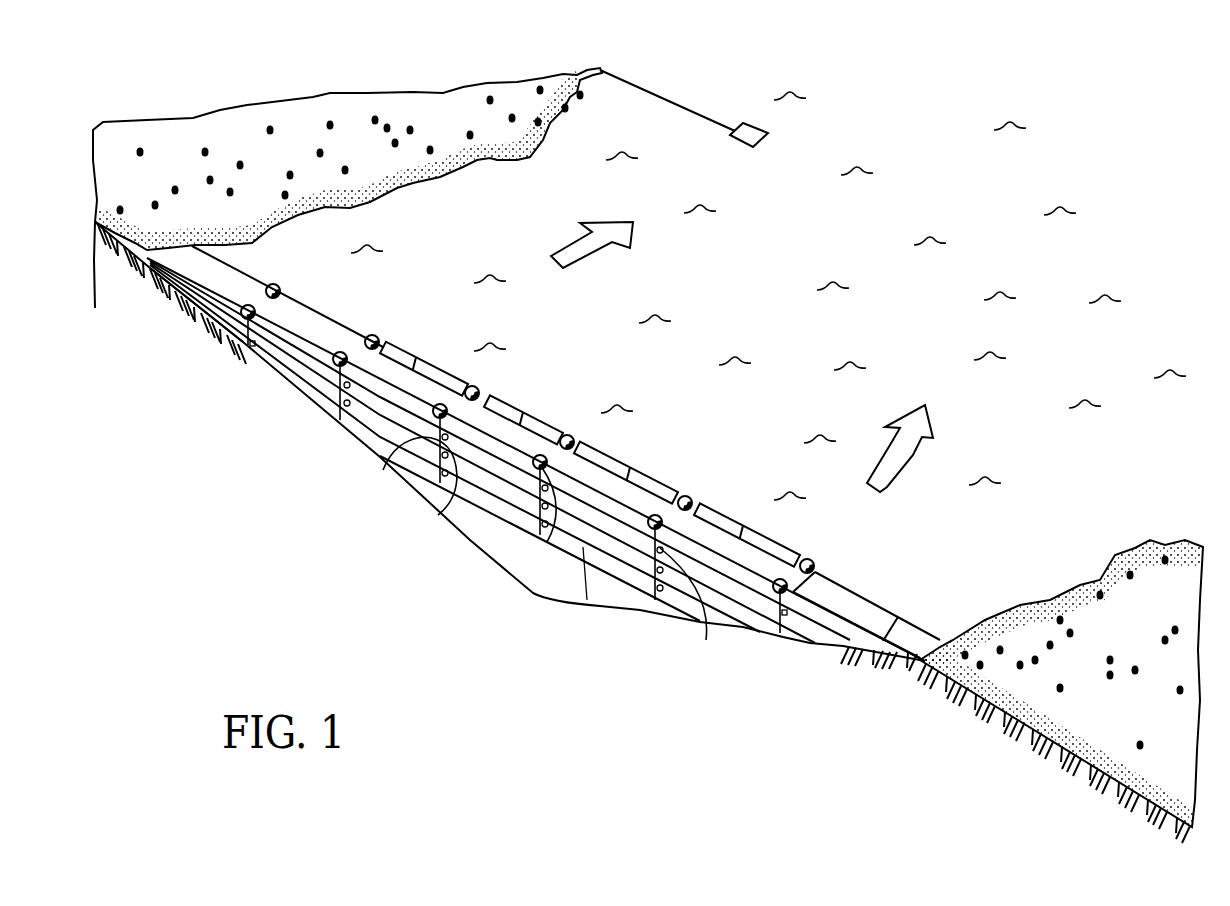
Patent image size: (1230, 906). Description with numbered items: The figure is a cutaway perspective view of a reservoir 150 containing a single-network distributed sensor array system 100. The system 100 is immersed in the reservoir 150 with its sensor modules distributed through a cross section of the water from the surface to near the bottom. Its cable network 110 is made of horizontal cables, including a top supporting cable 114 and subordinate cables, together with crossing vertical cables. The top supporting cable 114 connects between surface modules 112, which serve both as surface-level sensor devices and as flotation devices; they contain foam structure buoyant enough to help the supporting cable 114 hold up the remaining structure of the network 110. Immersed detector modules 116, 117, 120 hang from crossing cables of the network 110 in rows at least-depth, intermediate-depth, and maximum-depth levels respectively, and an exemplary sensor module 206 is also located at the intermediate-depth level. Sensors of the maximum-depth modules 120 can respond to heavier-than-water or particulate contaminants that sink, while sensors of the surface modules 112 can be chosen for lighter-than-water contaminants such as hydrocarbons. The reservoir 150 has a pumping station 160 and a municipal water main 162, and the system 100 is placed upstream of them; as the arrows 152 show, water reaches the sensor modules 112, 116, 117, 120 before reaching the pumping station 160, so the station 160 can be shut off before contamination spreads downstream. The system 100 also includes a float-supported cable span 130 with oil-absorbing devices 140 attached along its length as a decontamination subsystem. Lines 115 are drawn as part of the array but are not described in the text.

The distributed sensor array system 100 is at (545, 372).
The cable network 110 is at (587, 478).
The surface modules 112 is at (249, 303).
The top supporting cable 114 is at (355, 360).
The ballast line 115 is at (357, 395).
The least-depth detector modules 116 is at (410, 470).
The intermediate-depth detector modules 117 is at (251, 348).
The maximum-depth detector modules 120 is at (556, 523).
The float-supported cable span 130 is at (718, 517).
The oil-absorbing devices 140 is at (428, 352).
The reservoir 150 is at (833, 290).
The arrows 152 is at (577, 246).
The pumping station 160 is at (745, 122).
The municipal water main 162 is at (624, 72).
The sensor module 206 is at (443, 506).